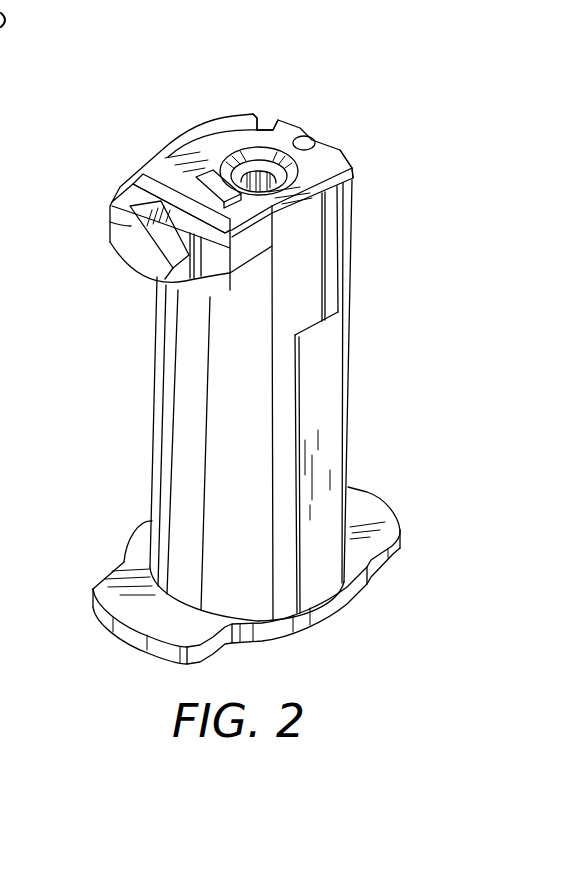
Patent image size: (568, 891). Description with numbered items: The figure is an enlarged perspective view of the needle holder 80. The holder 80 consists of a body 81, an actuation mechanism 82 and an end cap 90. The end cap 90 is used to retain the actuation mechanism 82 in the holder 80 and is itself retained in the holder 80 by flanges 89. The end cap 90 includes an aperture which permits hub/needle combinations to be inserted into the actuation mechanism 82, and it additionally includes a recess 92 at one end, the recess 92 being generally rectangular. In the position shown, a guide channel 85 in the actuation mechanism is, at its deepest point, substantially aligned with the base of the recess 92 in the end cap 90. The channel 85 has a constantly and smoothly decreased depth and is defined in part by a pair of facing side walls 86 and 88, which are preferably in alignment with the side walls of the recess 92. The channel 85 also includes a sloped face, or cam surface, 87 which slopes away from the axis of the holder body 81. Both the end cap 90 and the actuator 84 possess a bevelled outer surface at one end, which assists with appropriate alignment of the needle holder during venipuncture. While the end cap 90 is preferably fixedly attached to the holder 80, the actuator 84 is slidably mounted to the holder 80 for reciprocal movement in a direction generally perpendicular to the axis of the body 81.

The holder 80 is at (164, 108).
The body 81 is at (347, 407).
The actuation mechanism 82 is at (256, 173).
The actuator 84 is at (110, 240).
The guide channel 85 is at (130, 256).
The side wall 86 is at (147, 260).
The cam surface 87 is at (157, 273).
The side wall 88 is at (162, 280).
The flanges 89 is at (218, 168).
The end cap 90 is at (163, 152).
The recess 92 is at (178, 172).